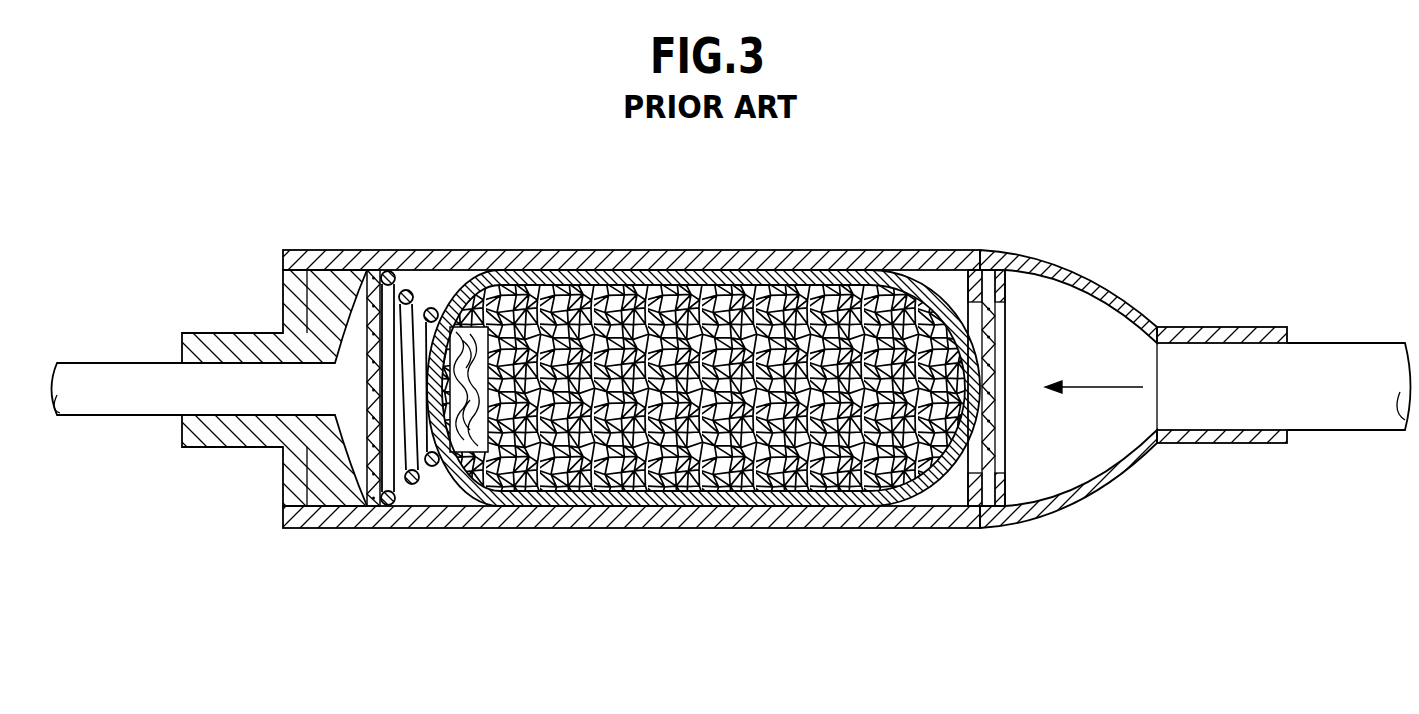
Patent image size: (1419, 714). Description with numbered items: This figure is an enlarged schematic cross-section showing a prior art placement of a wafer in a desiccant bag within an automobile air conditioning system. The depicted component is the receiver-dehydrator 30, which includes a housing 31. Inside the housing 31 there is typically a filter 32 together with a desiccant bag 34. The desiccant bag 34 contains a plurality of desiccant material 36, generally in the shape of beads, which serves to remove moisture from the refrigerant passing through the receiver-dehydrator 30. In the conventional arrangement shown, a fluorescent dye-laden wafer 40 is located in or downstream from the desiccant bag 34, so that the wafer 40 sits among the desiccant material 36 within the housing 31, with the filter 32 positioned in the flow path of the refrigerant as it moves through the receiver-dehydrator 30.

The receiver-dehydrator 30 is at (1040, 538).
The housing 31 is at (797, 517).
The filter 32 is at (992, 280).
The desiccant bag 34 is at (850, 278).
The desiccant material 36 is at (704, 478).
The fluorescent dye-laden wafer 40 is at (464, 333).